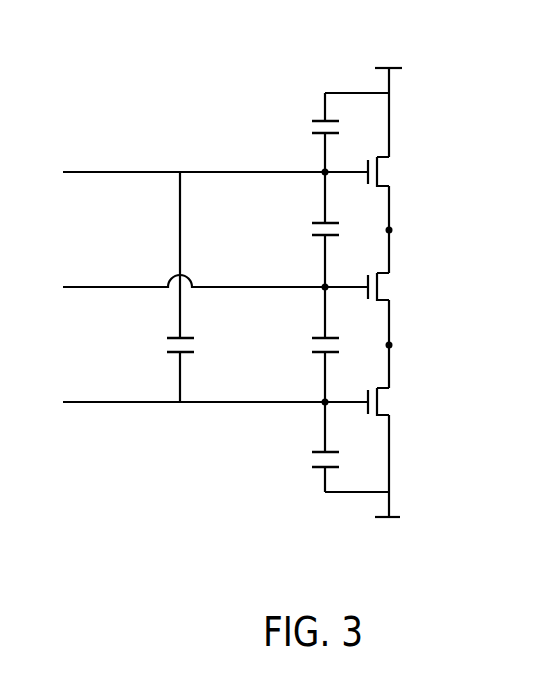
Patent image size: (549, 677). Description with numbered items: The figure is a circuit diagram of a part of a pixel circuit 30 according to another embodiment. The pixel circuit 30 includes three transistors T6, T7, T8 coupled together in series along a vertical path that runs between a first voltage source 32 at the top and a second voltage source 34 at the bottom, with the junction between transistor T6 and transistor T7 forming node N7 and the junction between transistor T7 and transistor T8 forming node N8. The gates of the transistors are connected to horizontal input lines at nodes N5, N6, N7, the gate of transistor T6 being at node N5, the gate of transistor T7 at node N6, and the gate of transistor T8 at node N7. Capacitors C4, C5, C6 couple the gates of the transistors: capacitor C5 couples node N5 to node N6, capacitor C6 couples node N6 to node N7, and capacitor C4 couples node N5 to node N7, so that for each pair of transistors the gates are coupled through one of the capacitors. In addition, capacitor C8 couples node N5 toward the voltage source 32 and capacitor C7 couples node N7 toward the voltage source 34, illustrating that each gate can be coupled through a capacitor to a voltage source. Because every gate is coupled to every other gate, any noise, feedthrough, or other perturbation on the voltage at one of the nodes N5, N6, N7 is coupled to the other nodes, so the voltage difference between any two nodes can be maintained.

The pixel circuit 30 is at (143, 71).
The voltage source 32 is at (386, 66).
The voltage source 34 is at (380, 521).
The capacitor C4 is at (161, 287).
The capacitor C5 is at (310, 230).
The capacitor C6 is at (310, 346).
The capacitor C7 is at (310, 461).
The capacitor C8 is at (310, 128).
The transistor T6 is at (396, 172).
The transistor T7 is at (396, 287).
The transistor T8 is at (396, 402).
The node N5 is at (322, 171).
The node N6 is at (322, 286).
The node N7 is at (322, 401).
The node N8 is at (392, 344).